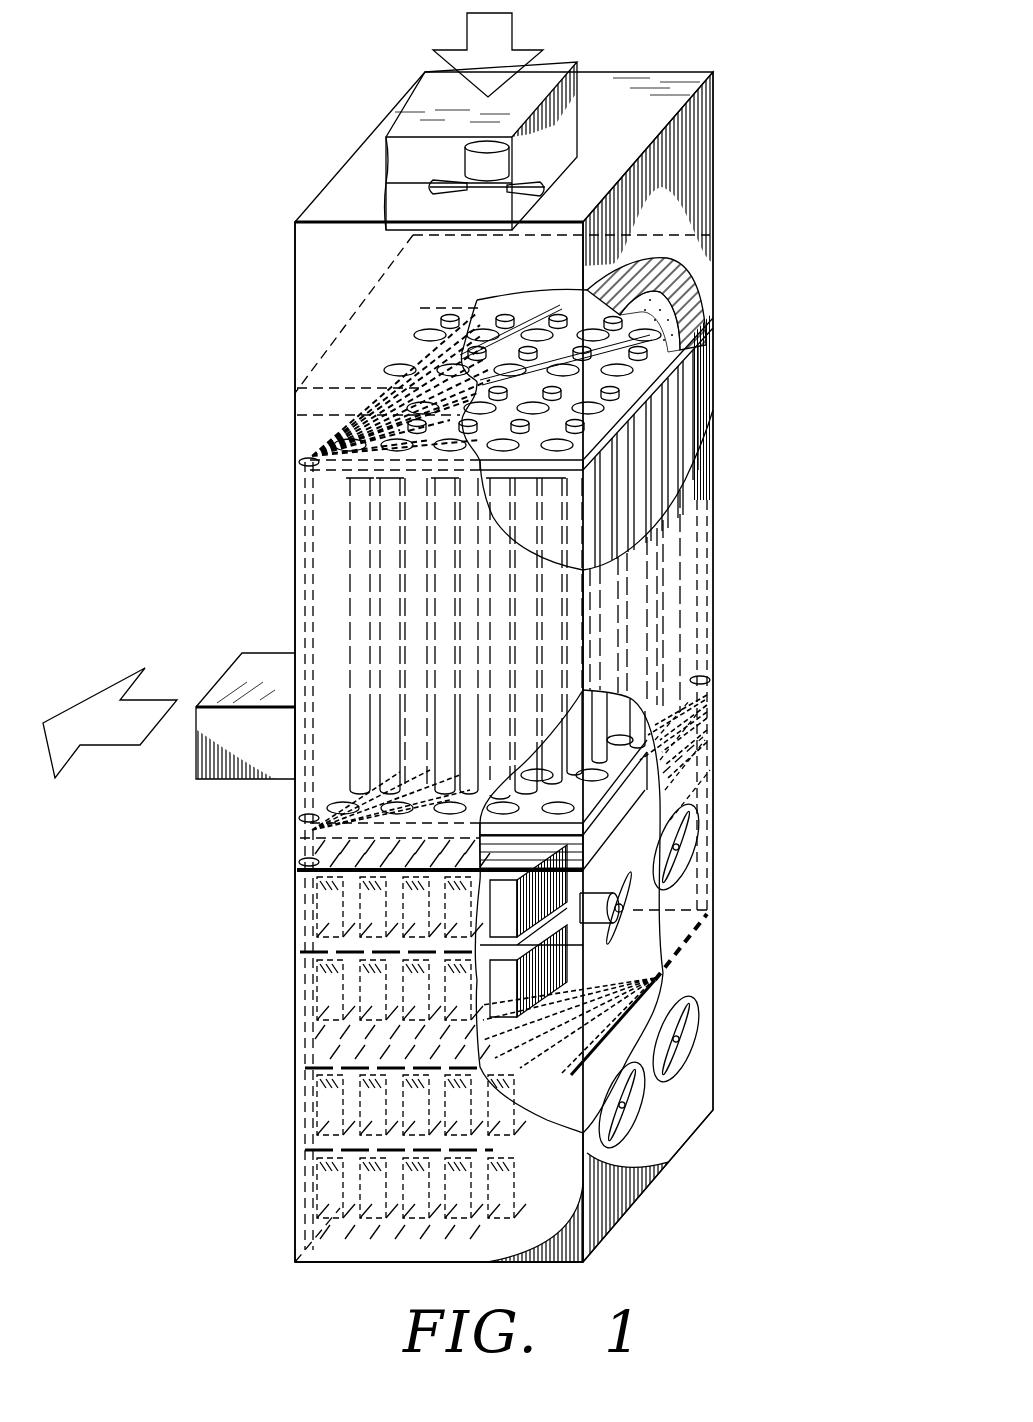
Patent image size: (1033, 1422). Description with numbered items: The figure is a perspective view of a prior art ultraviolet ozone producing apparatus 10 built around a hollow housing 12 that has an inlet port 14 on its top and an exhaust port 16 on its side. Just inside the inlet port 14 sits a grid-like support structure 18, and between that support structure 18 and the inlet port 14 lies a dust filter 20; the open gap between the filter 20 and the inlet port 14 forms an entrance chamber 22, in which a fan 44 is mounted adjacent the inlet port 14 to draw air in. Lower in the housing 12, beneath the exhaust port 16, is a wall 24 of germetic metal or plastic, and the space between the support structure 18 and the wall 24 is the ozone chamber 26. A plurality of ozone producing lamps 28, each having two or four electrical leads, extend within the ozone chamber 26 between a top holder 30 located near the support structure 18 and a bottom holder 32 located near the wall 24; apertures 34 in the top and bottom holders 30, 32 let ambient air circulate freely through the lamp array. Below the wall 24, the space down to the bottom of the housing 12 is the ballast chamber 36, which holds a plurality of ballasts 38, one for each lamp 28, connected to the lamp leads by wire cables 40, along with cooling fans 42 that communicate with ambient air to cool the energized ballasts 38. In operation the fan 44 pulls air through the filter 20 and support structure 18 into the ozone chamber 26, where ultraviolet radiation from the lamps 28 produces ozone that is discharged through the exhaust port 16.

The ultraviolet ozone producing apparatus 10 is at (793, 166).
The hollow housing 12 is at (718, 131).
The inlet port 14 is at (570, 112).
The exhaust port 16 is at (232, 667).
The grid-like support structure 18 is at (678, 288).
The dust filter 20 is at (672, 268).
The entrance chamber 22 is at (297, 262).
The wall 24 is at (716, 746).
The ozone chamber 26 is at (298, 582).
The ozone producing lamps 28 is at (668, 408).
The top holder 30 is at (590, 442).
The bottom holder 32 is at (702, 691).
The apertures 34 is at (640, 416).
The ballast chamber 36 is at (297, 1224).
The ballasts 38 is at (407, 902).
The wire cables 40 is at (700, 347).
The cooling fans 42 is at (692, 855).
The fan 44 is at (468, 167).